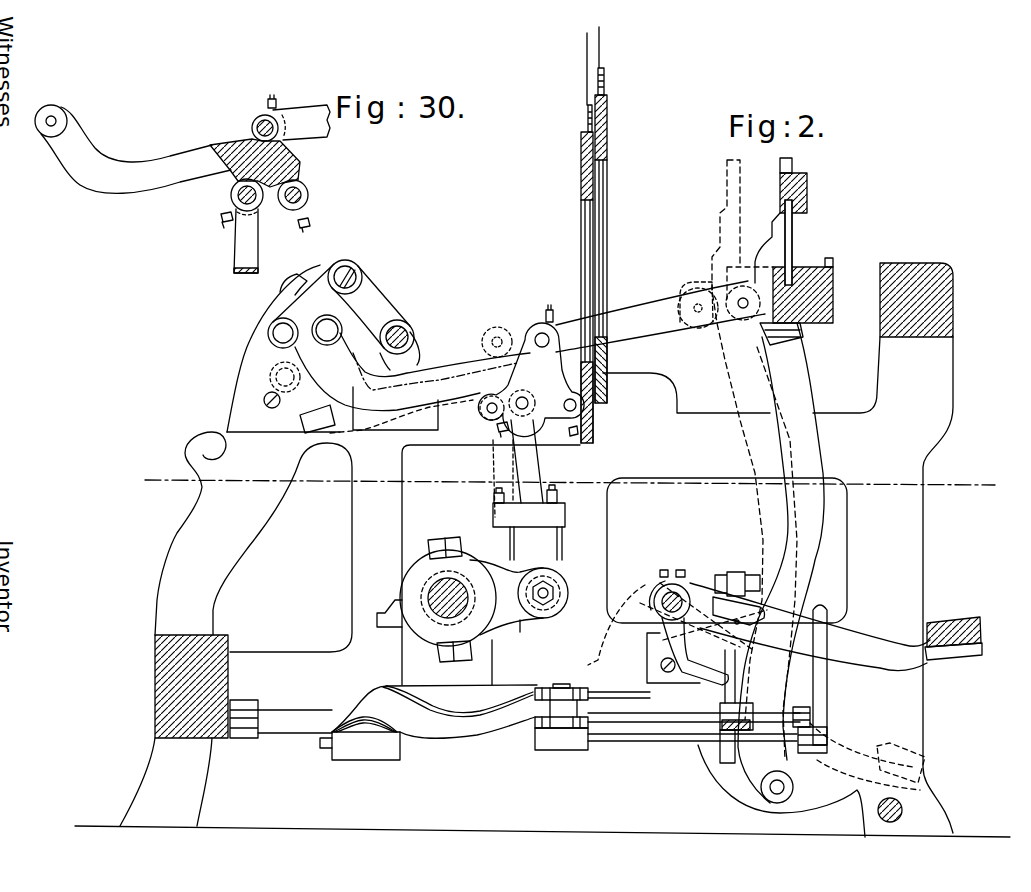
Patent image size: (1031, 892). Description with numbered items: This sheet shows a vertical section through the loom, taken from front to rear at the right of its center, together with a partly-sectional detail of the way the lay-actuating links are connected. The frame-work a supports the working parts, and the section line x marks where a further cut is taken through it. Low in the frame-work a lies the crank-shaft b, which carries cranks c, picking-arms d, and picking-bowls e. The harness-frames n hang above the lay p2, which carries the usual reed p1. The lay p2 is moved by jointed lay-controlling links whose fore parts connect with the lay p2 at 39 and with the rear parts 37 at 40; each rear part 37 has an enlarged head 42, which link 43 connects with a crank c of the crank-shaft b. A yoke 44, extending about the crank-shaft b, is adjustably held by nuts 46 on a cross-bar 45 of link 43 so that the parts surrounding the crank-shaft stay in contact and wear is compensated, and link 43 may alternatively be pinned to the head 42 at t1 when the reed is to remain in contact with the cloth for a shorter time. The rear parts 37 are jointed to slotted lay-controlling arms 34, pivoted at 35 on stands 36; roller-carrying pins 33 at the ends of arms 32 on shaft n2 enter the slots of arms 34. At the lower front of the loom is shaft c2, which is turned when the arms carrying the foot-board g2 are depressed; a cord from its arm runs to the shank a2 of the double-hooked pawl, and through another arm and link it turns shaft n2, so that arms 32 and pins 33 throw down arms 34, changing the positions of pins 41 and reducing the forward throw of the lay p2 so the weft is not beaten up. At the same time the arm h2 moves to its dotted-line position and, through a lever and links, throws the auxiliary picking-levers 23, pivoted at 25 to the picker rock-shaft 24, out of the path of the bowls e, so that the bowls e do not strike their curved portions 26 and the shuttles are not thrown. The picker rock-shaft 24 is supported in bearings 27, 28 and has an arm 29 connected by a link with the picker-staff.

In FIG. 30, the rear part of jointed lay-controlling link 37 is at (133, 149).
In FIG. 2, the rear part of jointed lay-controlling link 37 is at (412, 383).
In FIG. 30, the connection pin 40 is at (257, 127).
In FIG. 2, the connection pin 40 is at (542, 334).
In FIG. 30, the enlarged head 42 is at (285, 161).
In FIG. 2, the enlarged head 42 is at (531, 380).
In FIG. 30, the link 43 is at (252, 237).
In FIG. 2, the link 43 is at (531, 470).
In FIG. 30, the pin connection t1 is at (300, 195).
In FIG. 2, the pin connection t1 is at (592, 420).
In FIG. 2, the roller-carrying pins 33 is at (347, 273).
In FIG. 2, the slotted lay-controlling arms 34 is at (315, 281).
In FIG. 2, the arms 32 is at (387, 307).
In FIG. 2, the pivot 35 is at (277, 333).
In FIG. 2, the stands 36 is at (247, 370).
In FIG. 2, the pins 41 is at (327, 330).
In FIG. 2, the shaft n2 is at (407, 337).
In FIG. 2, the shank of double-hooked pawl a2 is at (401, 353).
In FIG. 2, the harness-frames n is at (595, 235).
In FIG. 2, the connection of fore link part to lay 39 is at (741, 310).
In FIG. 2, the reed p1 is at (795, 240).
In FIG. 2, the lay p2 is at (838, 278).
In FIG. 2, the section line x is at (566, 481).
In FIG. 2, the nuts 46 is at (494, 507).
In FIG. 2, the cross-bar 45 is at (565, 515).
In FIG. 2, the yoke 44 is at (565, 545).
In FIG. 2, the frame-work a is at (542, 550).
In FIG. 2, the bowls e is at (566, 583).
In FIG. 2, the picking-arms d is at (471, 598).
In FIG. 2, the crank-shaft b is at (430, 607).
In FIG. 2, the cranks c is at (518, 631).
In FIG. 2, the shaft c2 is at (662, 596).
In FIG. 2, the foot-board g2 is at (962, 604).
In FIG. 2, the bearing 28 is at (245, 705).
In FIG. 2, the curved portions of auxiliary picking-levers 26 is at (433, 700).
In FIG. 2, the picker rock-shaft 24 is at (633, 735).
In FIG. 2, the auxiliary picking-levers 23 is at (480, 730).
In FIG. 2, the pivot of auxiliary picking-levers 25 is at (565, 715).
In FIG. 2, the arm 29 is at (725, 670).
In FIG. 2, the arm h2 is at (687, 658).
In FIG. 2, the bearing 27 is at (820, 700).